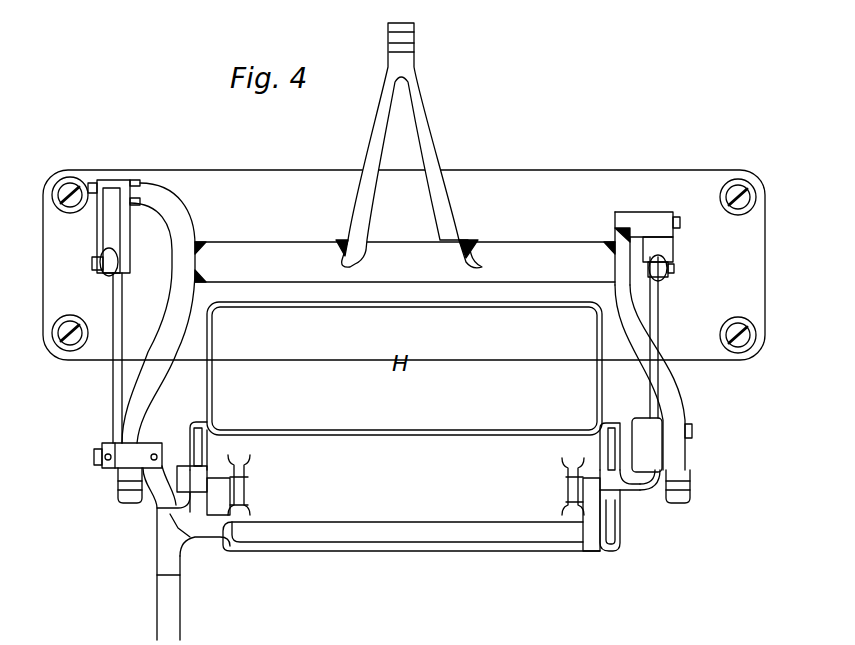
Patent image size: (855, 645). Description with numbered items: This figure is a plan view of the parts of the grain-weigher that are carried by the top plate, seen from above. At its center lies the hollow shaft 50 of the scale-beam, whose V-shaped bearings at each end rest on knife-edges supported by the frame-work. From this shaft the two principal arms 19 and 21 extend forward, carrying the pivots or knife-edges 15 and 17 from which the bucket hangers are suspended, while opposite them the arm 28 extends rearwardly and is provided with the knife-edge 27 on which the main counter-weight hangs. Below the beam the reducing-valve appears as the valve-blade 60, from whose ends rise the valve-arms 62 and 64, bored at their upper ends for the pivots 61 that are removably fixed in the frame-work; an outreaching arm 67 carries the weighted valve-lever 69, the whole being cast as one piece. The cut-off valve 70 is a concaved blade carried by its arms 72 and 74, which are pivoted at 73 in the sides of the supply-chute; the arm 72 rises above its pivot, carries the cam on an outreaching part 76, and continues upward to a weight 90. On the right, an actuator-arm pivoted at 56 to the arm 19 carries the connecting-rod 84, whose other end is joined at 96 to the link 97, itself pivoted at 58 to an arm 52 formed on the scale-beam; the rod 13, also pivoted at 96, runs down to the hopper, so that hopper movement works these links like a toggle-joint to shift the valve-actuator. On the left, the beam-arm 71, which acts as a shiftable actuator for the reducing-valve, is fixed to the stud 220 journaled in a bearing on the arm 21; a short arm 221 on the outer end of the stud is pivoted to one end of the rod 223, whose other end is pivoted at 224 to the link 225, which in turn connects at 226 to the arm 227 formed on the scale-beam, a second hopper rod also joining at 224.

The rod 13 is at (107, 276).
The pivot or knife-edge 15 is at (686, 494).
The pivot or knife-edge 17 is at (122, 494).
The principal arm of the scale-beam 19 is at (630, 336).
The principal arm of the scale-beam 21 is at (181, 323).
The pivot or knife-edge 27 is at (414, 37).
The arm 28 is at (422, 142).
The hollow shaft 50 is at (512, 256).
The arm 52 is at (622, 233).
The pivot 56 is at (694, 436).
The pivot 58 is at (678, 224).
The valve-blade 60 is at (437, 532).
The pivots 61 is at (246, 492).
The valve-arm 62 is at (591, 520).
The valve-arm 64 is at (222, 540).
The outreaching arm 67 is at (193, 525).
The valve-lever 69 is at (166, 552).
The cut-off valve 70 is at (200, 440).
The beam-arm 71 is at (162, 498).
The arm 72 is at (618, 441).
The pivots 73 is at (182, 468).
The arm 74 is at (194, 438).
The outreaching part 76 is at (650, 493).
The connecting-rod 84 is at (655, 313).
The weight 90 is at (647, 445).
The pivot 96 is at (674, 269).
The arm or link 97 is at (662, 243).
The stud 220 is at (92, 457).
The short arm 221 is at (108, 452).
The rod 223 is at (118, 328).
The pivot 224 is at (92, 265).
The arm or link 225 is at (108, 238).
The pivot 226 is at (92, 182).
The arm 227 is at (178, 212).